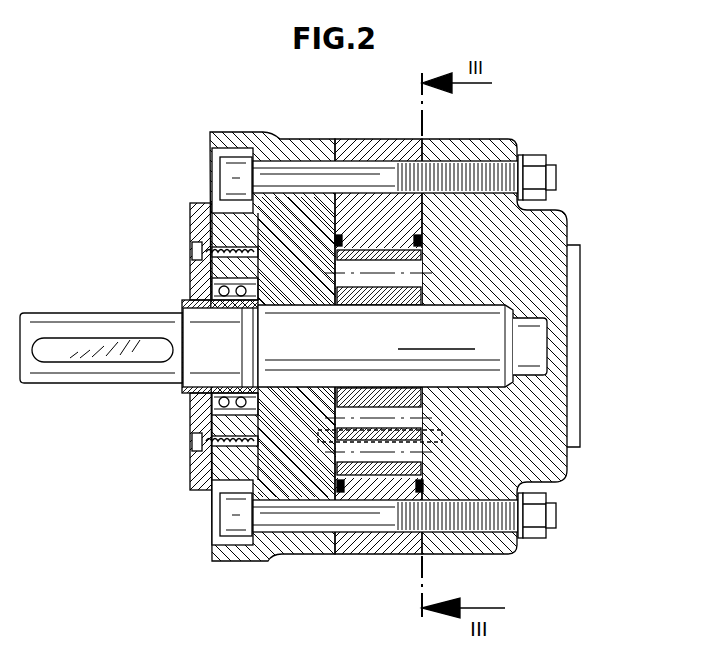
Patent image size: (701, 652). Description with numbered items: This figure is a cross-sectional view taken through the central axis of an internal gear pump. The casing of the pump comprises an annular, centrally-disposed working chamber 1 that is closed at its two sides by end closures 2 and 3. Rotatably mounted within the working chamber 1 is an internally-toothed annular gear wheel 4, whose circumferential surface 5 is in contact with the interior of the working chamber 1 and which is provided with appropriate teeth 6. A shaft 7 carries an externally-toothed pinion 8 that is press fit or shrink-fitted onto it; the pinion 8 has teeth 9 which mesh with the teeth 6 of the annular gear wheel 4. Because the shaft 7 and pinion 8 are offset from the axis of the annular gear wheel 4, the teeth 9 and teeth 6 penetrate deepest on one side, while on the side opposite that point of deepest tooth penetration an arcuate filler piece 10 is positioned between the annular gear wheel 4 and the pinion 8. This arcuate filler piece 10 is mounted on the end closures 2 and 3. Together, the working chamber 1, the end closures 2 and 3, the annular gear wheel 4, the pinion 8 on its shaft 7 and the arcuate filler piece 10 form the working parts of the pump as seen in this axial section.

The working chamber 1 is at (360, 157).
The end closure 2 is at (308, 157).
The end closure 3 is at (480, 147).
The annular gear wheel 4 is at (418, 473).
The circumferential surface 5 is at (395, 248).
The teeth 6 is at (345, 468).
The shaft 7 is at (372, 351).
The pinion 8 is at (425, 300).
The teeth 9 is at (335, 262).
The arcuate filler piece 10 is at (418, 436).